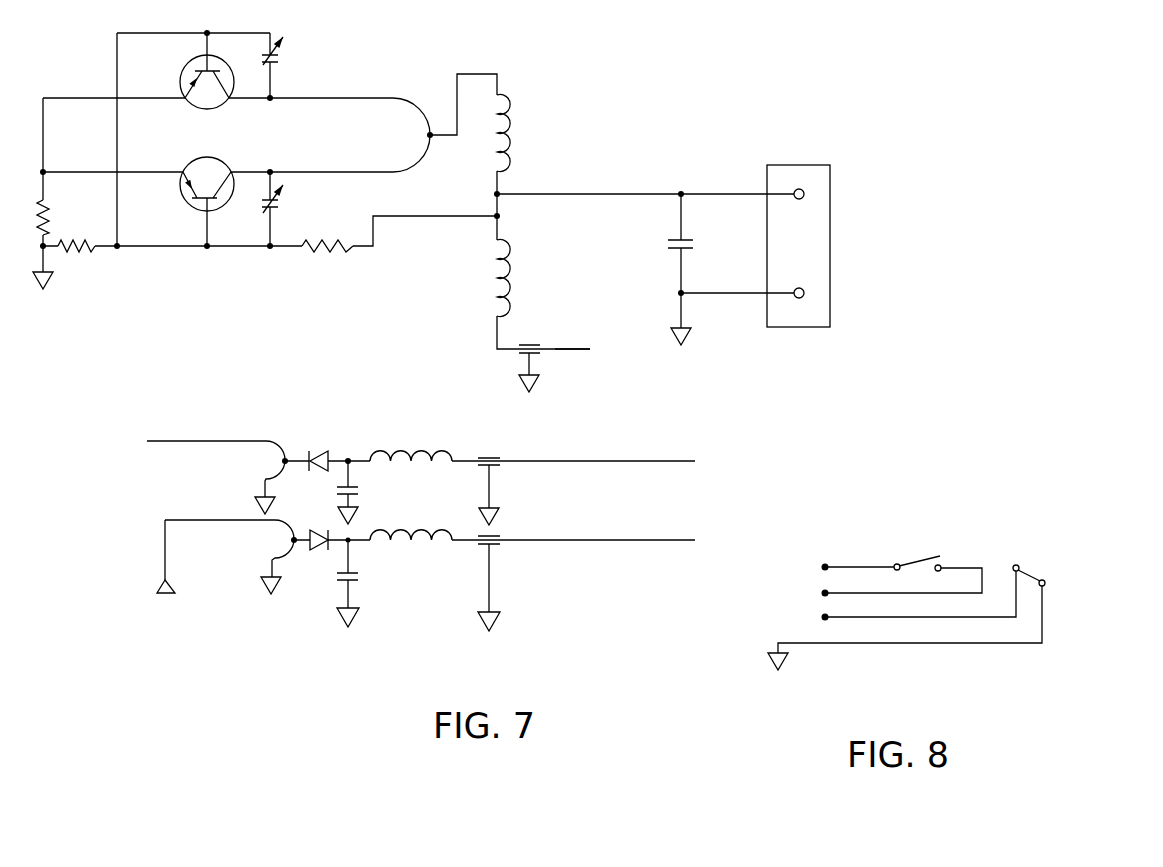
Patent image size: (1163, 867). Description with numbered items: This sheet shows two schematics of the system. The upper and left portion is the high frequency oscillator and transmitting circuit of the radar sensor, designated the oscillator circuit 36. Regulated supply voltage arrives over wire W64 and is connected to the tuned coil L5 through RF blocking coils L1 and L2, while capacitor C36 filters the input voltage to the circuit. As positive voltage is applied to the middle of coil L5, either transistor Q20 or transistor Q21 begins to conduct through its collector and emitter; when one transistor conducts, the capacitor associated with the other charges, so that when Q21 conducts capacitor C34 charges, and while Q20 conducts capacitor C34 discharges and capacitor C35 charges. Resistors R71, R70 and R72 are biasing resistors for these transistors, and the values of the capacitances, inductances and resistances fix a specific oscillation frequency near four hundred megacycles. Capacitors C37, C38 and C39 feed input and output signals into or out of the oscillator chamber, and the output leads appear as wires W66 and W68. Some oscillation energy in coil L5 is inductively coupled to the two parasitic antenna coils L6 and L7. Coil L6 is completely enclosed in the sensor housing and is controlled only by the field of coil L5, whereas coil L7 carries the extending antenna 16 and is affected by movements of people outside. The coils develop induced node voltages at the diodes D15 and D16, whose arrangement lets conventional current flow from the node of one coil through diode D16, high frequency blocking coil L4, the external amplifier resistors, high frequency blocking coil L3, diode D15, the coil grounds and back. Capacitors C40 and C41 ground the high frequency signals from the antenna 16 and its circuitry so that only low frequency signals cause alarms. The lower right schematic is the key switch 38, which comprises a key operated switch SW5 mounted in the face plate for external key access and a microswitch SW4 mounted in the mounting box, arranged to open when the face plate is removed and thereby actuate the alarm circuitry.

In FIG. 7, the biasing resistor R70 is at (80, 260).
In FIG. 7, the biasing resistor R71 is at (50, 218).
In FIG. 7, the biasing resistor R72 is at (334, 256).
In FIG. 7, the transistor Q20 is at (229, 104).
In FIG. 7, the transistor Q21 is at (229, 164).
In FIG. 7, the capacitor C34 is at (276, 68).
In FIG. 7, the capacitor C35 is at (287, 207).
In FIG. 7, the tuned coil L5 is at (387, 95).
In FIG. 7, the RF blocking coil L1 is at (508, 136).
In FIG. 7, the RF blocking coil L2 is at (508, 285).
In FIG. 7, the capacitor C36 is at (684, 251).
In FIG. 7, the capacitor C37 is at (530, 340).
In FIG. 7, the wire W64 is at (575, 353).
In FIG. 7, the parasitic antenna coil L6 is at (240, 440).
In FIG. 7, the parasitic antenna coil L7 is at (226, 522).
In FIG. 7, the antenna 16 is at (157, 590).
In FIG. 7, the diode D15 is at (322, 449).
In FIG. 7, the diode D16 is at (322, 529).
In FIG. 7, the capacitor C40 is at (355, 494).
In FIG. 7, the capacitor C41 is at (356, 583).
In FIG. 7, the high frequency blocking coil L3 is at (402, 449).
In FIG. 7, the high frequency blocking coil L4 is at (427, 527).
In FIG. 7, the capacitor C38 is at (493, 456).
In FIG. 7, the capacitor C39 is at (495, 547).
In FIG. 7, the wire W66 is at (617, 460).
In FIG. 7, the wire W68 is at (614, 541).
In FIG. 8, the oscillator circuit 36 is at (778, 492).
In FIG. 8, the microswitch SW4 is at (923, 560).
In FIG. 8, the key operated switch SW5 is at (1028, 557).
In FIG. 8, the key switch 38 is at (1077, 645).